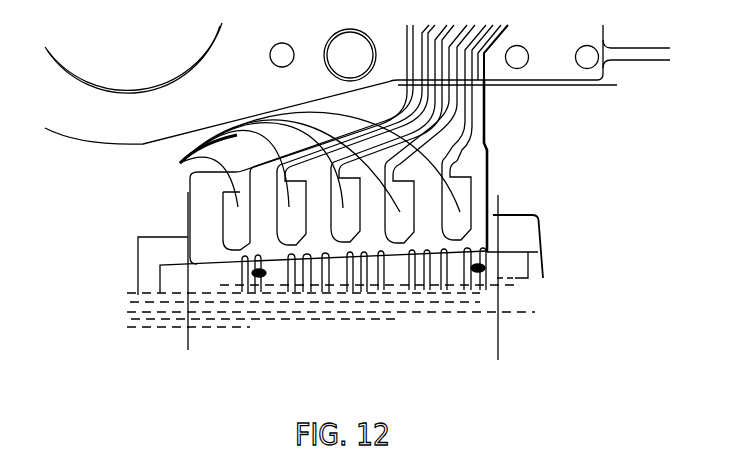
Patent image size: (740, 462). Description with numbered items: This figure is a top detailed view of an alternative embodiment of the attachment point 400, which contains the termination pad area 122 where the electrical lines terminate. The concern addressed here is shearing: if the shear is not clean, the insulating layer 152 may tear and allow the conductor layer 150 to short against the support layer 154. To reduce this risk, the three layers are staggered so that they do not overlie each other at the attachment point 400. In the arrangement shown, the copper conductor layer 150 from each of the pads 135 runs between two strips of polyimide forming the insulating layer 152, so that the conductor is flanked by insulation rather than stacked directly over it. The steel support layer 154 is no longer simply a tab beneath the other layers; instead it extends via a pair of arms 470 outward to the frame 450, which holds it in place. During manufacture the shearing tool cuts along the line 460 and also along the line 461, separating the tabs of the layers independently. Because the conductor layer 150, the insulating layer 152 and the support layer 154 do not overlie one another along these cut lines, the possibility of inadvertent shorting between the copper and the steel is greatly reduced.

The attachment point 400 is at (98, 267).
The pads 135 is at (180, 163).
The conductor layer 150 is at (462, 208).
The insulating layer 152 is at (490, 266).
The termination pad area 122 is at (137, 265).
The arms 470 is at (157, 237).
The support layer 154 is at (540, 221).
The cut line 460 is at (540, 255).
The cut line 461 is at (188, 352).
The frame 450 is at (537, 312).